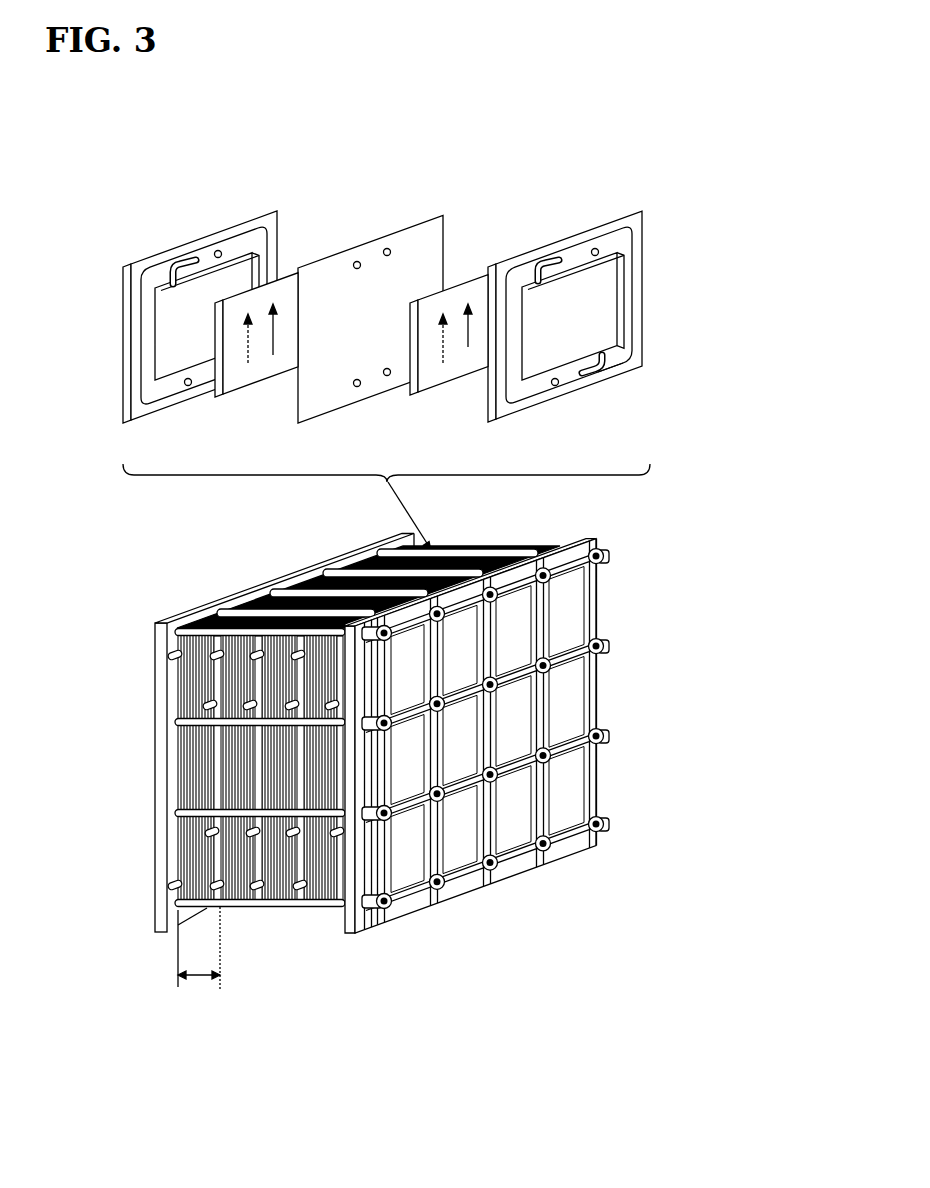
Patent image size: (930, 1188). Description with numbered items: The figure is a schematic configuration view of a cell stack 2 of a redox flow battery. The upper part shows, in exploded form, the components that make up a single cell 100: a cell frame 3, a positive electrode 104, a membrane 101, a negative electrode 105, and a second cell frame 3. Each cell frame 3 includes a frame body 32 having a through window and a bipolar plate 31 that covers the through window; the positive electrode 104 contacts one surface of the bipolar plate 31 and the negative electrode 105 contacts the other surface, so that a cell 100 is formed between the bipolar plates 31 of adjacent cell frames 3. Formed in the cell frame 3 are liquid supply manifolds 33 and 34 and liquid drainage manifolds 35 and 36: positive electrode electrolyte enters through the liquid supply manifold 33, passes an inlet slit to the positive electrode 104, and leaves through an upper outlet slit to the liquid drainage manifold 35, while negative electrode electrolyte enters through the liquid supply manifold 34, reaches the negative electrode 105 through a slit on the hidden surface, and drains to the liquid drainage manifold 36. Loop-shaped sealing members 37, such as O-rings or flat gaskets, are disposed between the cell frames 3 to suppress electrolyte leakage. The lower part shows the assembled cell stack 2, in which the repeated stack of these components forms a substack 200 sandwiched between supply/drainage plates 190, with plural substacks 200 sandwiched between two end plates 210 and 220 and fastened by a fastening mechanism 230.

The cell stack 2 is at (607, 700).
The cell frame 3 is at (381, 314).
The bipolar plate 31 is at (177, 338).
The frame body 32 is at (130, 330).
The liquid supply manifold 33 is at (607, 371).
The liquid supply manifold 34 is at (188, 386).
The liquid drainage manifold 35 is at (187, 262).
The liquid drainage manifold 36 is at (218, 250).
The sealing member 37 is at (267, 240).
The cell 100 is at (188, 160).
The membrane 101 is at (398, 226).
The positive electrode 104 is at (267, 381).
The negative electrode 105 is at (433, 381).
The supply/drainage plate 190 is at (177, 867).
The substack 200 is at (200, 967).
The end plate 210 is at (520, 792).
The end plate 220 is at (155, 646).
The fastening mechanism 230 is at (268, 588).